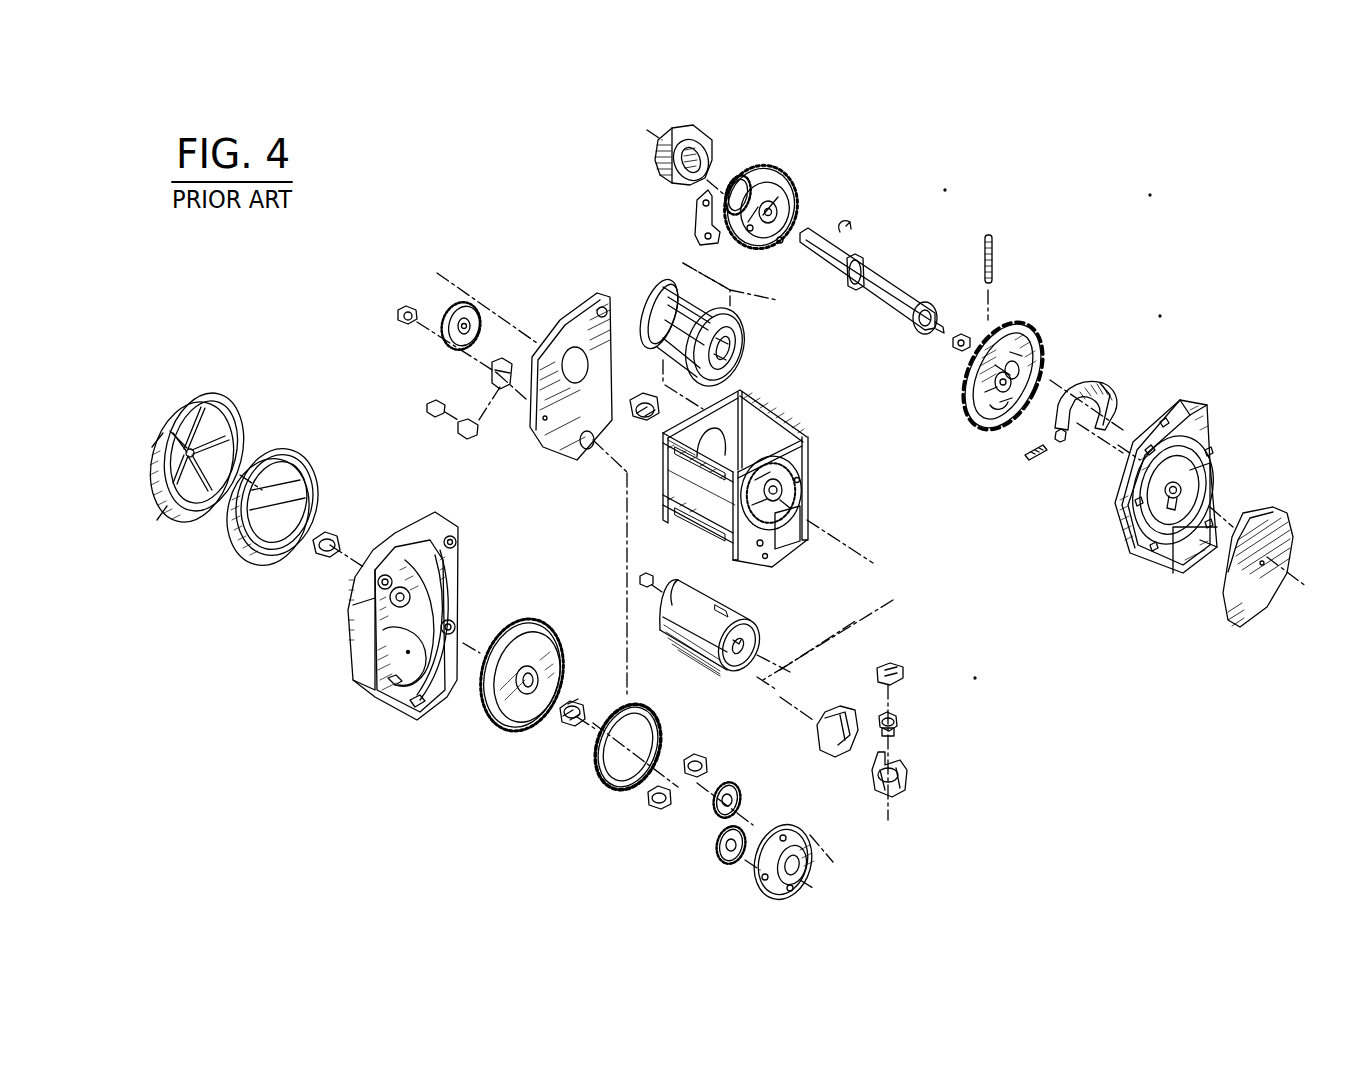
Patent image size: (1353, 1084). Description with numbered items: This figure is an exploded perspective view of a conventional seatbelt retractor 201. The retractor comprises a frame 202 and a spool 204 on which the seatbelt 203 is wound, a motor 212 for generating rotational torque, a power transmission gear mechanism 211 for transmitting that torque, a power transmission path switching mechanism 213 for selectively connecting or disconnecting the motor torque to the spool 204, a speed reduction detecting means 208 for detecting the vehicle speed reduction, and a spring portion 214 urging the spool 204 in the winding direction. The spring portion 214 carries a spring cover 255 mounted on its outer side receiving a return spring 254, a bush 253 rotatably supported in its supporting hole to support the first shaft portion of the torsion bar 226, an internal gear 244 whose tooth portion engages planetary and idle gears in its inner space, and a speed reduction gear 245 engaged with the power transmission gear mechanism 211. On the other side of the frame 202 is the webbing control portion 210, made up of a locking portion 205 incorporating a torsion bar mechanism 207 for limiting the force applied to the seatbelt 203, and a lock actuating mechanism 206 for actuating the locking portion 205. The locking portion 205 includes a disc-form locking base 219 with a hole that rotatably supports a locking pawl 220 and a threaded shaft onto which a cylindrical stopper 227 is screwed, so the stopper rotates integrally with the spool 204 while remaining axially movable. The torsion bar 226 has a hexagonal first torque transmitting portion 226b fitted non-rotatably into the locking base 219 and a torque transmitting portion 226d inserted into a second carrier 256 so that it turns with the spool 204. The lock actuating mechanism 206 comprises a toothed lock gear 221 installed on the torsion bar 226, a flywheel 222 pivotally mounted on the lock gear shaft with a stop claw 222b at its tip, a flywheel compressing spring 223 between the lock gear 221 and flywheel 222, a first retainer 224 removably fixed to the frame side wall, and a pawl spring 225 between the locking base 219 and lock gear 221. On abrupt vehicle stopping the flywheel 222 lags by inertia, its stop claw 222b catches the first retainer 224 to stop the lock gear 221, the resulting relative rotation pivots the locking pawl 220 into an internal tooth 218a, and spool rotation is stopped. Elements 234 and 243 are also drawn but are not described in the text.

The seatbelt retractor 201 is at (972, 677).
The frame 202 is at (812, 458).
The seatbelt 203 is at (749, 288).
The seatbelt spool 204 is at (747, 340).
The locking portion 205 is at (757, 157).
The lock actuating mechanism 206 is at (1157, 313).
The torsion bar mechanism 207 is at (943, 187).
The speed reduction detecting means 208 is at (925, 777).
The webbing control portion 210 is at (1148, 192).
The power transmission gear mechanism 211 is at (410, 280).
The motor 212 is at (665, 640).
The power transmission path switching mechanism 213 is at (765, 910).
The spring portion 214 is at (363, 690).
The internal tooth 218a is at (800, 477).
The locking base 219 is at (797, 182).
The locking pawl 220 is at (695, 226).
The lock gear 221 is at (968, 390).
The flywheel 222 is at (1118, 396).
The stop claw 222b is at (1057, 443).
The flywheel compressing spring 223 is at (1028, 462).
The first retainer 224 is at (1197, 400).
The pawl spring 225 is at (992, 248).
The torsion bar 226 is at (900, 290).
The first torque transmitting portion 226b is at (937, 347).
The torque transmitting portion 226d is at (853, 254).
The cylindrical stopper 227 is at (657, 140).
The cover plate 234 is at (1280, 507).
The pinion gear 243 is at (562, 725).
The internal gear 244 is at (600, 787).
The speed reduction gear 245 is at (483, 727).
The bush 253 is at (318, 557).
The return spring 254 is at (248, 565).
The spring cover 255 is at (173, 523).
The second carrier 256 is at (627, 393).